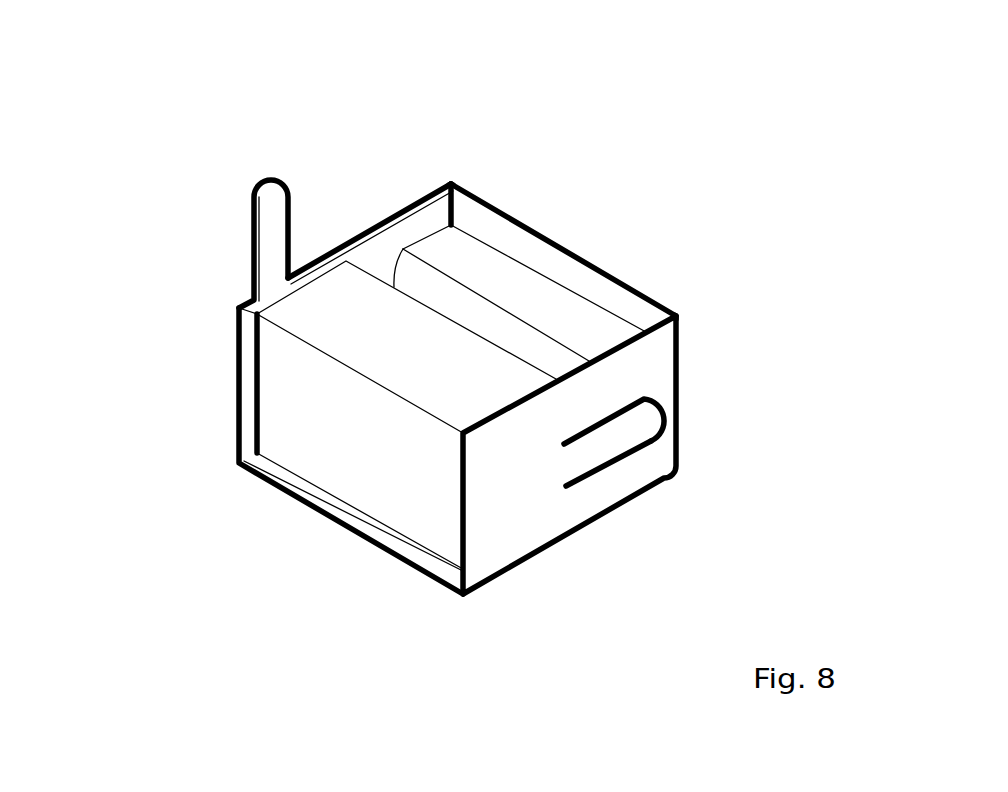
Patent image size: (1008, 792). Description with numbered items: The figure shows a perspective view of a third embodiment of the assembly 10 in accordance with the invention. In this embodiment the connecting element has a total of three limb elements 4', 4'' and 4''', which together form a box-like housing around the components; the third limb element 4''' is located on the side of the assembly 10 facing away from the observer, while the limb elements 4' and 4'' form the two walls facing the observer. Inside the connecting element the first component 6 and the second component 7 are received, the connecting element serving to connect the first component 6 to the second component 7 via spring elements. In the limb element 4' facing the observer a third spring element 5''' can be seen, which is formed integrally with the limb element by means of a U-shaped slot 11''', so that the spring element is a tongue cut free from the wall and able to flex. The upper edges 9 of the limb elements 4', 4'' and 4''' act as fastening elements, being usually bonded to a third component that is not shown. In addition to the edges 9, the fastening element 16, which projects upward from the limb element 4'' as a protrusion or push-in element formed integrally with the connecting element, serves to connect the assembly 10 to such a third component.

The limb element 4' is at (569, 502).
The limb element 4'' is at (281, 347).
The third limb element 4''' is at (563, 234).
The third spring element 5''' is at (690, 458).
The first component 6 is at (380, 498).
The second component 7 is at (535, 307).
The edge 9 is at (434, 186).
The assembly 10 is at (763, 268).
The U-shaped slot 11''' is at (647, 520).
The fastening element 16 is at (268, 213).